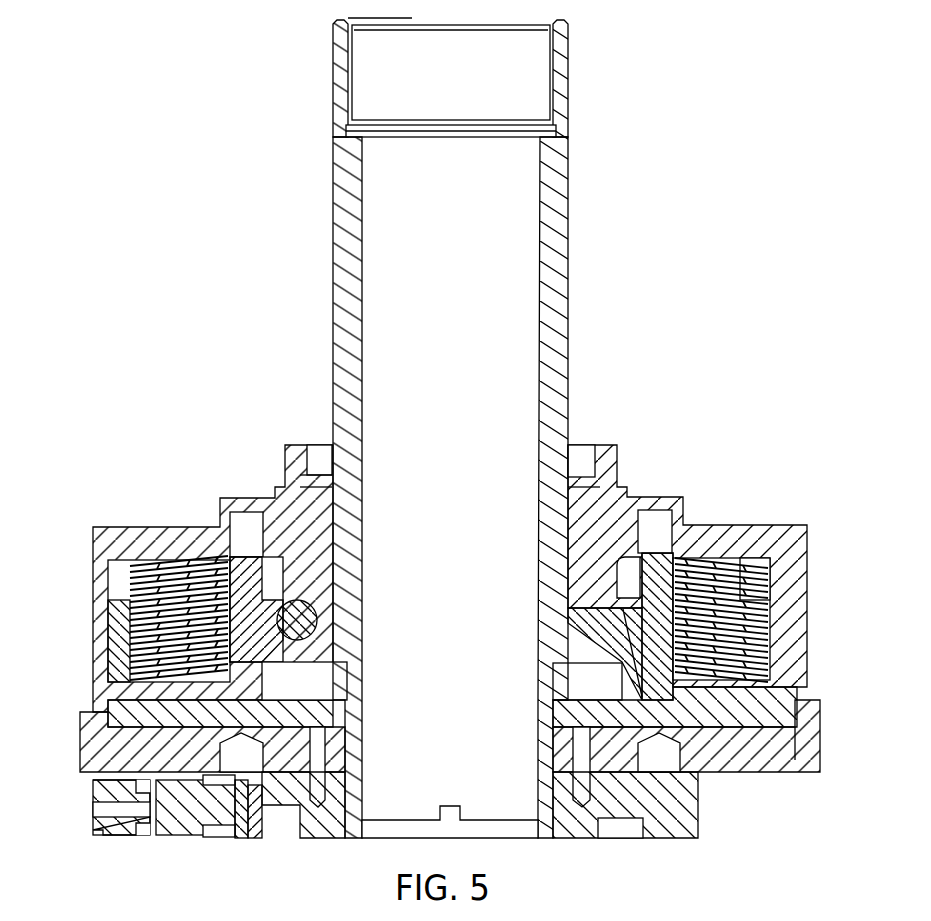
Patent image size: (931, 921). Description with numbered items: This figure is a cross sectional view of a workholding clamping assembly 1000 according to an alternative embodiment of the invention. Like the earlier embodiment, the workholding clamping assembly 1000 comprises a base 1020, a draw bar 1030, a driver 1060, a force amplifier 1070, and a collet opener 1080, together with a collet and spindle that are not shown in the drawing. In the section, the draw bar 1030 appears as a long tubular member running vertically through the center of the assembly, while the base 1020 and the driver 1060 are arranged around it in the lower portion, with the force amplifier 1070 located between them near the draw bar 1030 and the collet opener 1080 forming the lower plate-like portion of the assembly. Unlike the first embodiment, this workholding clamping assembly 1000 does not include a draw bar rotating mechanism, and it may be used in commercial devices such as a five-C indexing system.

The workholding clamping assembly 1000 is at (180, 134).
The base 1020 is at (748, 525).
The draw bar 1030 is at (567, 173).
The driver 1060 is at (155, 586).
The force amplifier 1070 is at (268, 573).
The collet opener 1080 is at (70, 784).